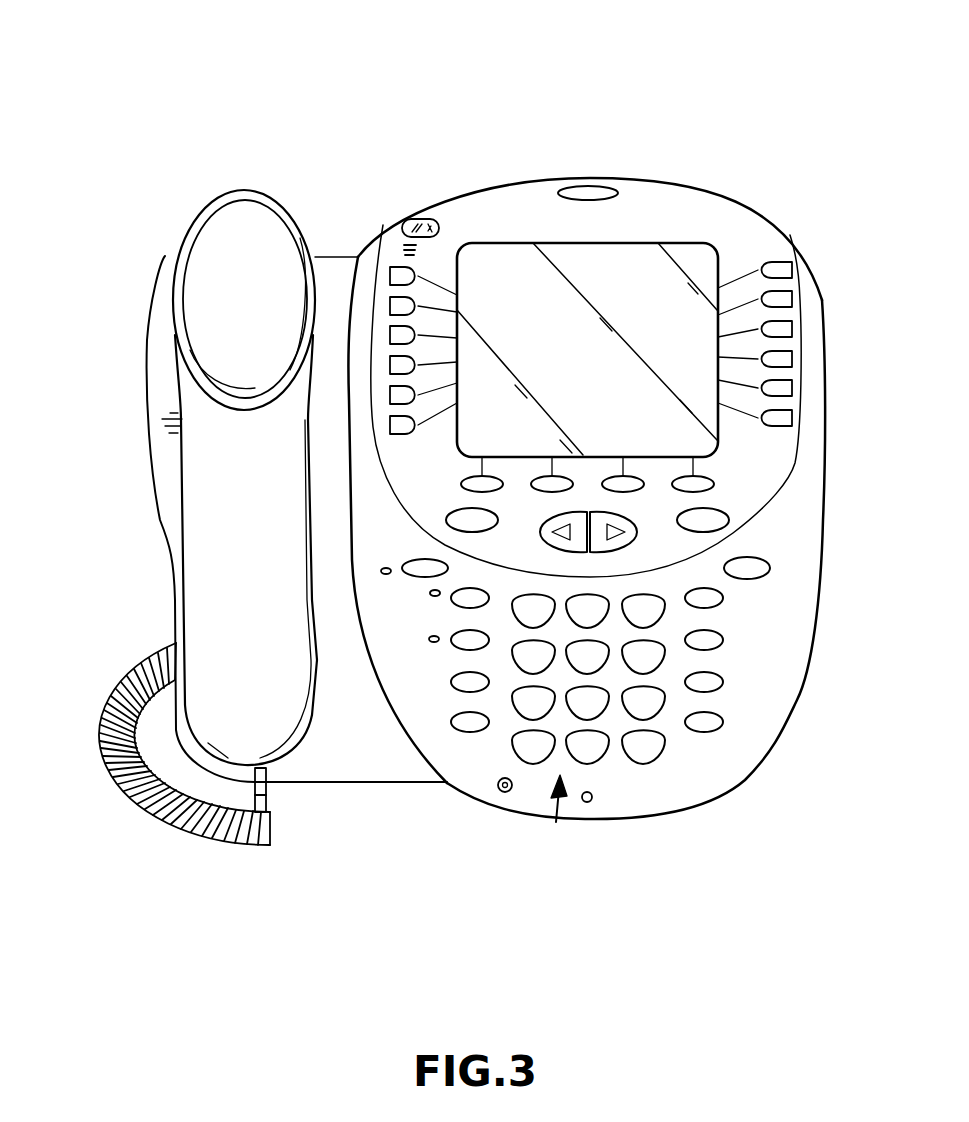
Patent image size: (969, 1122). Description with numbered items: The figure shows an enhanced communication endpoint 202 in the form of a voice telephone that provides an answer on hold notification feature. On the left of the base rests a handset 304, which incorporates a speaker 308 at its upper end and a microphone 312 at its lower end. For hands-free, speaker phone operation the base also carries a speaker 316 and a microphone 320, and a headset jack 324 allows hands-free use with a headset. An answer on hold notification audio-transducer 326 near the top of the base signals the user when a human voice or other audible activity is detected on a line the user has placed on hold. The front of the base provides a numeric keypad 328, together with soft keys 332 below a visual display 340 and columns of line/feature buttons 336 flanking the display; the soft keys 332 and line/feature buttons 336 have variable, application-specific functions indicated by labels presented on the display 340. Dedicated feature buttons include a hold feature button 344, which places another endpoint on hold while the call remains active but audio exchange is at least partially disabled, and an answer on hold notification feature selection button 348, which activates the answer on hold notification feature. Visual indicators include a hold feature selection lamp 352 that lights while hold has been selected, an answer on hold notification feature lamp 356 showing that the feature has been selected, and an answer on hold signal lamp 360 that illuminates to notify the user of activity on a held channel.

The enhanced communication endpoint 202 is at (769, 91).
The handset 304 is at (205, 226).
The speaker 308 is at (272, 188).
The microphone 312 is at (285, 740).
The speaker 316 is at (175, 418).
The microphone 320 is at (592, 802).
The headset jack 324 is at (507, 793).
The answer on hold notification audio-transducer 326 is at (405, 252).
The numeric keypad 328 is at (556, 822).
The soft keys 332 is at (700, 480).
The line/feature buttons 336 is at (776, 272).
The visual display 340 is at (497, 245).
The hold feature button 344 is at (404, 566).
The answer on hold notification feature selection button 348 is at (457, 648).
The hold feature selection lamp 352 is at (380, 571).
The answer on hold notification feature lamp 356 is at (434, 646).
The answer on hold signal lamp 360 is at (598, 190).